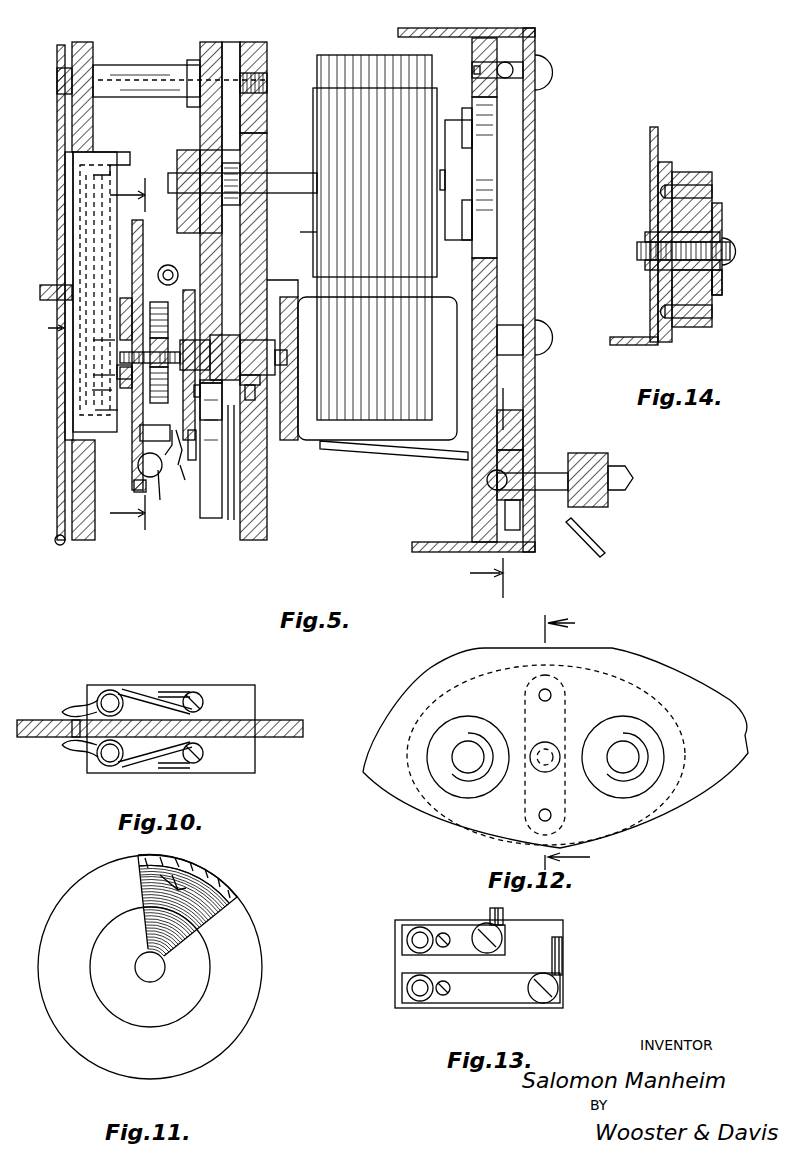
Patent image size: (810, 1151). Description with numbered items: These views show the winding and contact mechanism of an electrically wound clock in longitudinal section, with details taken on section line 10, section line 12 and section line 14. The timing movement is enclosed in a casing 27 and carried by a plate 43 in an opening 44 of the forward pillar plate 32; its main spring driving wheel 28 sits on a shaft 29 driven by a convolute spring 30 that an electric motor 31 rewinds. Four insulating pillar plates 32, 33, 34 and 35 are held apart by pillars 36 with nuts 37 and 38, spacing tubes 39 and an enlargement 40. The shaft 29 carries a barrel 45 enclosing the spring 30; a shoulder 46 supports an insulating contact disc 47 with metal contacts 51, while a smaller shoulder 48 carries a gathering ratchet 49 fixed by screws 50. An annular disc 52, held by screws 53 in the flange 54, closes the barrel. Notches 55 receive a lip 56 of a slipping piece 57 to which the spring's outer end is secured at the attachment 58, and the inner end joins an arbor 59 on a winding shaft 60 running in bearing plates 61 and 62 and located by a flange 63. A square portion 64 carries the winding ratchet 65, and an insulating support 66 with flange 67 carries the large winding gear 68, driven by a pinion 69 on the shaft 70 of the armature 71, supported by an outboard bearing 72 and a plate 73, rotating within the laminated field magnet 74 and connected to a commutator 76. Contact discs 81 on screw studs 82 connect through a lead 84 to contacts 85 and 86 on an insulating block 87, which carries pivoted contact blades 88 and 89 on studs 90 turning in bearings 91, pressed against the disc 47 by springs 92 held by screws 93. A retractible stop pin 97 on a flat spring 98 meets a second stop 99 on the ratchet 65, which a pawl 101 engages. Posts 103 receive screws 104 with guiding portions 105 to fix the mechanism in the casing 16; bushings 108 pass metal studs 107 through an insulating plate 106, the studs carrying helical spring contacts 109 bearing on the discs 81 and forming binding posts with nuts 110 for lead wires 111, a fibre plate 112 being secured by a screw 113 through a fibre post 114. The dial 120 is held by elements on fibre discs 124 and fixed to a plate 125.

In FIG. 5, the section line 10 is at (127, 354).
In FIG. 5, the section line 12 is at (488, 493).
In FIG. 12, the section line 14 is at (575, 739).
In FIG. 5, the casing 16 is at (535, 295).
In FIG. 14, the casing 16 is at (658, 140).
In FIG. 12, the casing 16 is at (398, 800).
In FIG. 5, the enclosing casing 27 is at (118, 158).
In FIG. 5, the main spring driving wheel 28 is at (60, 350).
In FIG. 5, the shaft 29 is at (73, 380).
In FIG. 5, the convolute spring 30 is at (160, 302).
In FIG. 11, the convolute spring 30 is at (146, 935).
In FIG. 5, the electric motor 31 is at (345, 55).
In FIG. 5, the pillar plate 32 is at (82, 540).
In FIG. 5, the pillar plate 33 is at (210, 518).
In FIG. 5, the pillar plate 34 is at (256, 540).
In FIG. 5, the pillar plate 35 is at (472, 520).
In FIG. 5, the pillars 36 is at (267, 78).
In FIG. 5, the nut 37 is at (57, 72).
In FIG. 5, the nut 38 is at (200, 55).
In FIG. 5, the spacing tubes 39 is at (142, 65).
In FIG. 5, the enlargement 40 is at (231, 50).
In FIG. 5, the plate 43 is at (73, 222).
In FIG. 5, the opening 44 is at (93, 148).
In FIG. 5, the barrel 45 is at (162, 448).
In FIG. 11, the barrel 45 is at (258, 905).
In FIG. 5, the shoulder 46 is at (120, 340).
In FIG. 5, the insulating contact disc 47 is at (143, 245).
In FIG. 10, the insulating contact disc 47 is at (290, 722).
In FIG. 5, the second shoulder 48 is at (117, 372).
In FIG. 5, the gathering ratchet 49 is at (128, 379).
In FIG. 5, the screws 50 is at (125, 395).
In FIG. 5, the metal contacts 51 is at (134, 490).
In FIG. 10, the metal contacts 51 is at (72, 730).
In FIG. 5, the annular disc 52 is at (180, 462).
In FIG. 5, the screws 53 is at (176, 268).
In FIG. 5, the flange 54 is at (172, 450).
In FIG. 11, the notches 55 is at (180, 862).
In FIG. 11, the lip 56 is at (168, 868).
In FIG. 11, the slipping piece 57 is at (235, 895).
In FIG. 11, the spring attachment 58 is at (205, 882).
In FIG. 5, the arbor 59 is at (195, 340).
In FIG. 11, the arbor 59 is at (152, 980).
In FIG. 5, the winding shaft 60 is at (251, 357).
In FIG. 5, the bearing plate 61 is at (211, 399).
In FIG. 5, the bearing plate 62 is at (300, 305).
In FIG. 5, the flange 63 is at (270, 330).
In FIG. 5, the square portion 64 is at (230, 343).
In FIG. 5, the winding ratchet 65 is at (189, 290).
In FIG. 5, the insulating support 66 is at (260, 380).
In FIG. 5, the flange 67 is at (255, 392).
In FIG. 5, the winding gear 68 is at (232, 520).
In FIG. 5, the pinion 69 is at (252, 178).
In FIG. 5, the shaft 70 is at (290, 173).
In FIG. 5, the motor armature 71 is at (313, 118).
In FIG. 5, the outboard bearing 72 is at (180, 160).
In FIG. 5, the plate 73 is at (500, 228).
In FIG. 5, the laminated field magnet 74 is at (330, 220).
In FIG. 5, the commutator 76 is at (452, 120).
In FIG. 5, the contact discs 81 is at (510, 552).
In FIG. 5, the screw studs 82 is at (485, 488).
In FIG. 5, the lead 84 is at (396, 460).
In FIG. 13, the lead 84 is at (562, 950).
In FIG. 13, the contact 85 is at (558, 988).
In FIG. 13, the contact 86 is at (458, 927).
In FIG. 10, the insulating block 87 is at (255, 694).
In FIG. 13, the insulating block 87 is at (563, 928).
In FIG. 10, the contact blade 88 is at (66, 710).
In FIG. 10, the contact blade 89 is at (66, 748).
In FIG. 10, the studs 90 is at (110, 690).
In FIG. 13, the studs 90 is at (410, 946).
In FIG. 10, the bearings 91 is at (118, 700).
In FIG. 13, the bearings 91 is at (408, 936).
In FIG. 10, the springs 92 is at (150, 698).
In FIG. 10, the screws 93 is at (201, 697).
In FIG. 5, the retractible stop pin 97 is at (160, 498).
In FIG. 5, the flat spring 98 is at (150, 441).
In FIG. 5, the second stop 99 is at (190, 432).
In FIG. 5, the pawl 101 is at (211, 395).
In FIG. 5, the posts 103 is at (520, 58).
In FIG. 5, the securing screws 104 is at (540, 85).
In FIG. 5, the reduced guiding portions 105 is at (474, 66).
In FIG. 5, the insulating plate 106 is at (523, 458).
In FIG. 14, the insulating plate 106 is at (665, 345).
In FIG. 12, the insulating plate 106 is at (442, 826).
In FIG. 5, the metal stud 107 is at (540, 477).
In FIG. 5, the insulating bushings 108 is at (545, 530).
In FIG. 5, the helical spring contact 109 is at (520, 425).
In FIG. 12, the helical spring contact 109 is at (490, 750).
In FIG. 5, the nuts 110 is at (590, 500).
In FIG. 5, the lead wires 111 is at (603, 552).
In FIG. 14, the fibre plate 112 is at (712, 200).
In FIG. 14, the screw 113 is at (735, 248).
In FIG. 12, the screw 113 is at (540, 768).
In FIG. 14, the fibre post 114 is at (722, 285).
In FIG. 12, the fibre post 114 is at (566, 720).
In FIG. 5, the dial 120 is at (65, 462).
In FIG. 5, the fibre discs 124 is at (60, 545).
In FIG. 5, the plate 125 is at (57, 255).